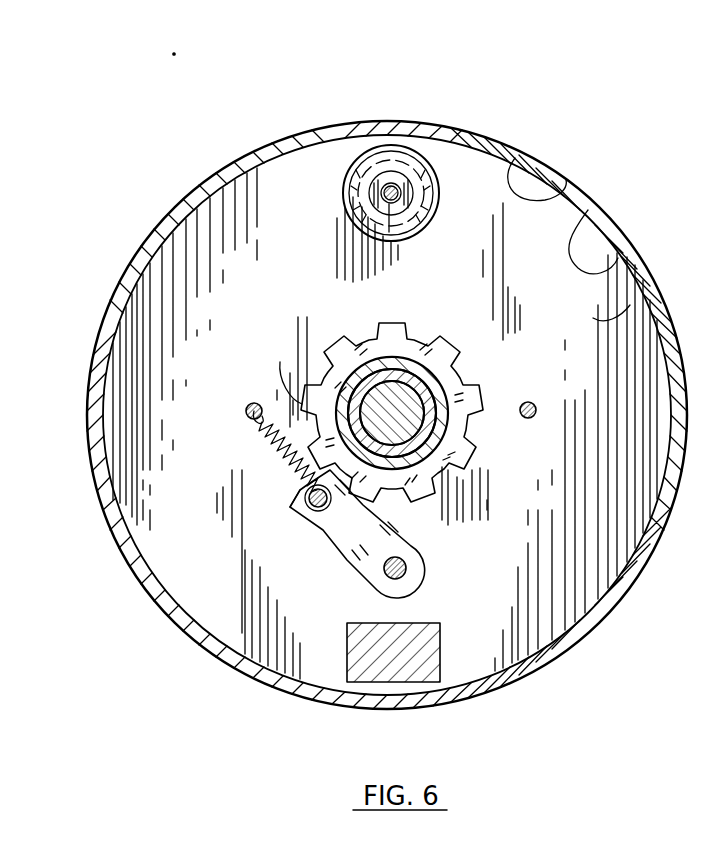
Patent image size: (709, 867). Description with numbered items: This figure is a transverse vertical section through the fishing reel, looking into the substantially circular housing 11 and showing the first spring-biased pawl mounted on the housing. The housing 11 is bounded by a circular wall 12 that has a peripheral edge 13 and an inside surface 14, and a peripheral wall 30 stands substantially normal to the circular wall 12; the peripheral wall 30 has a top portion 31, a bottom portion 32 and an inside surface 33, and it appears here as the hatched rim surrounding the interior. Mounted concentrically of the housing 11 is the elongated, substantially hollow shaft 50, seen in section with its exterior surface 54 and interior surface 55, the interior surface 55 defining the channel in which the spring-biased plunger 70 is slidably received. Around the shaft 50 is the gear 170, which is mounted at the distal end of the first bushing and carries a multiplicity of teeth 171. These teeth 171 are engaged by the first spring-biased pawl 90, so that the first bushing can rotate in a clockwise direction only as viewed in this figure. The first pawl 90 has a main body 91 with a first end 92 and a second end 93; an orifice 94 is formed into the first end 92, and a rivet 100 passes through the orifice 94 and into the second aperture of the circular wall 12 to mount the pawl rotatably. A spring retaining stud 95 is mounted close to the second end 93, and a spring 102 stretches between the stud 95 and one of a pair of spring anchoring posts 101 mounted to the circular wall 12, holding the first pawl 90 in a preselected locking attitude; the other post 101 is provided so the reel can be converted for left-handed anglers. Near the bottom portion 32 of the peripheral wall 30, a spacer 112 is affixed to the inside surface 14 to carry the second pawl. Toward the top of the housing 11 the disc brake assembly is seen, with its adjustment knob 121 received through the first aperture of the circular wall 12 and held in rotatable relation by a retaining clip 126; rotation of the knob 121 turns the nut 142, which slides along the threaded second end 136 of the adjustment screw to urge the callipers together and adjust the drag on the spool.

The housing 11 is at (634, 217).
The circular wall 12 is at (630, 305).
The peripheral edge 13 is at (515, 158).
The inside surface 14 is at (236, 244).
The peripheral wall 30 is at (518, 678).
The top portion 31 is at (362, 122).
The bottom portion 32 is at (368, 708).
The inside surface 33 is at (588, 210).
The shaft 50 is at (421, 388).
The exterior surface 54 is at (438, 410).
The interior surface 55 is at (432, 396).
The spring-biased plunger 70 is at (406, 423).
The first spring-biased pawl 90 is at (351, 536).
The main body 91 is at (360, 538).
The first end 92 is at (407, 568).
The second end 93 is at (298, 511).
The orifice 94 is at (400, 563).
The spring retaining stud 95 is at (306, 499).
The rivet 100 is at (404, 578).
The spring anchoring posts 101 is at (245, 413).
The spring 102 is at (268, 445).
The spacer 112 is at (347, 668).
The adjustment knob 121 is at (422, 208).
The retaining clip 126 is at (436, 186).
The threaded second end 136 is at (401, 193).
The nut 142 is at (379, 216).
The gear 170 is at (394, 332).
The teeth 171 is at (345, 344).